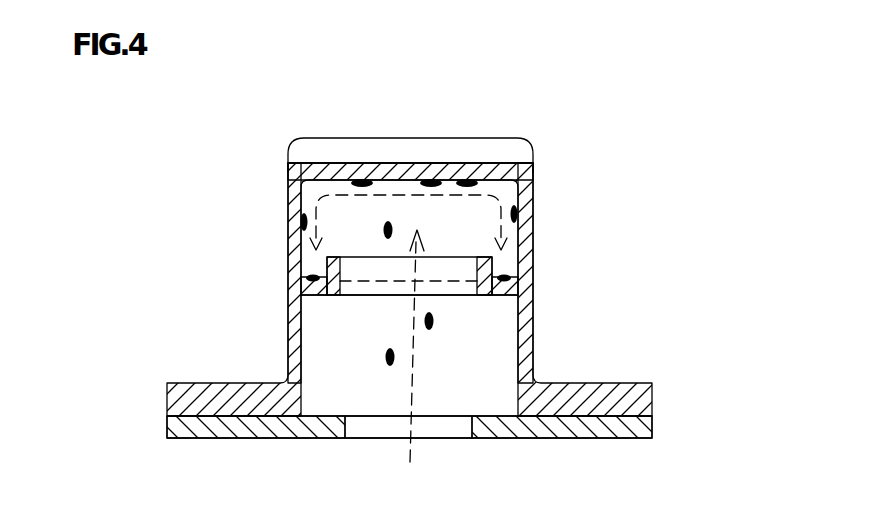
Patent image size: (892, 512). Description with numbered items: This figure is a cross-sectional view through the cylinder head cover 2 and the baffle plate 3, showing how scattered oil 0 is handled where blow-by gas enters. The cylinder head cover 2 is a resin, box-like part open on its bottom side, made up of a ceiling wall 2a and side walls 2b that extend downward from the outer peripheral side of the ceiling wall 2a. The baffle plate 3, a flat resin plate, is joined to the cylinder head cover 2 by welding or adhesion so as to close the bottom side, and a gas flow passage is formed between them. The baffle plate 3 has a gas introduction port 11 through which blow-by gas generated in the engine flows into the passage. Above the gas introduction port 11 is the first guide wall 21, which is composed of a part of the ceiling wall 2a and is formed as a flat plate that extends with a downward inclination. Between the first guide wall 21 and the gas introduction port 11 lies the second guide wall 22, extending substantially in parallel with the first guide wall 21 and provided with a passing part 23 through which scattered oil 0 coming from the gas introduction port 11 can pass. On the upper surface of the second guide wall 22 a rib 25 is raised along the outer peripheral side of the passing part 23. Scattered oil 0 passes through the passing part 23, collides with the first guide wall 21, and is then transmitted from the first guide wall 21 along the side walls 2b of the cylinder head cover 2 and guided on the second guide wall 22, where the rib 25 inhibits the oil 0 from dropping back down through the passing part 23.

The cylinder head cover 2 is at (500, 131).
The ceiling wall 2a is at (417, 163).
The side wall 2b is at (297, 242).
The first guide wall 21 is at (352, 165).
The second guide wall 22 is at (328, 309).
The passing part 23 is at (495, 302).
The rib 25 is at (492, 265).
The scattered oil 0 is at (354, 182).
The gas introduction port 11 is at (460, 440).
The baffle plate 3 is at (541, 443).